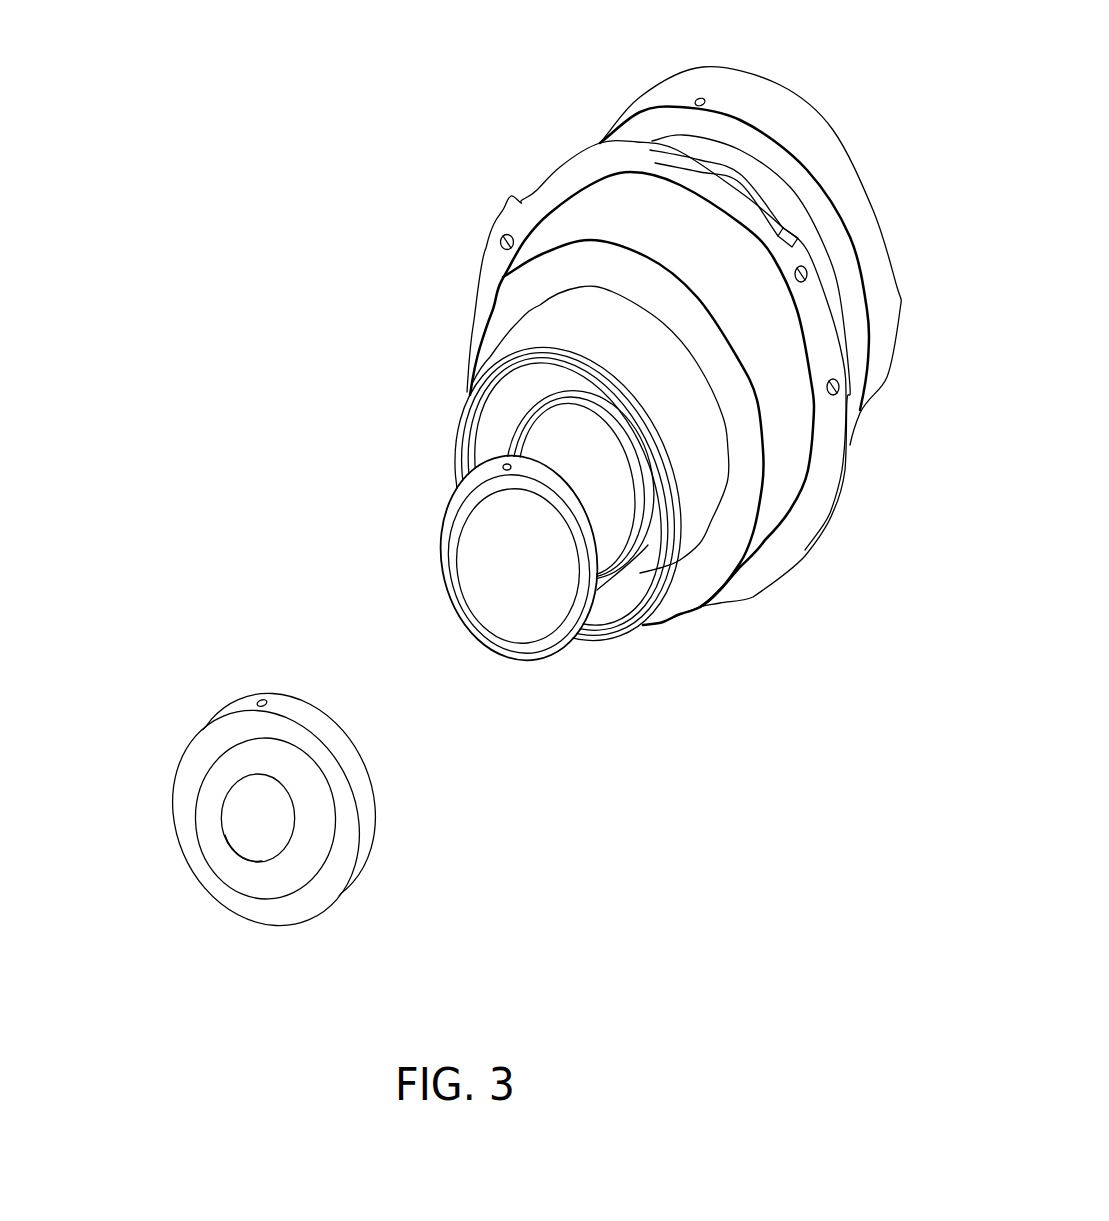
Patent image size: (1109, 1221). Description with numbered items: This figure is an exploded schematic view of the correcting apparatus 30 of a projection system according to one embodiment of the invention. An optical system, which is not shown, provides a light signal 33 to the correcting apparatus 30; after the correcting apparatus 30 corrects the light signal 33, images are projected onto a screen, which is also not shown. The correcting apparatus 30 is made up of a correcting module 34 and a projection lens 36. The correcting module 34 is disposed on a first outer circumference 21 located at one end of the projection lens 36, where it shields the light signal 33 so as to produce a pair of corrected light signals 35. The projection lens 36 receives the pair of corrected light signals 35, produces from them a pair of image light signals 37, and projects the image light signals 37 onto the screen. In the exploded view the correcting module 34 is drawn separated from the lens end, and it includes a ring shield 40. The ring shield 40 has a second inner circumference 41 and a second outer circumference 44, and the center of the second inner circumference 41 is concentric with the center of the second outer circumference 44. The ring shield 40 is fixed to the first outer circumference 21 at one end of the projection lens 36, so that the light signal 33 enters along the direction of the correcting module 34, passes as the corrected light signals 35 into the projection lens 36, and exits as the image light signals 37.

The first outer circumference 21 is at (552, 662).
The correcting apparatus 30 is at (212, 401).
The light signal 33 is at (155, 946).
The correcting module 34 is at (397, 821).
The corrected light signals 35 is at (434, 663).
The projection lens 36 is at (548, 190).
The image light signals 37 is at (918, 65).
The ring shield 40 is at (295, 883).
The second inner circumference 41 is at (296, 824).
The second outer circumference 44 is at (178, 769).